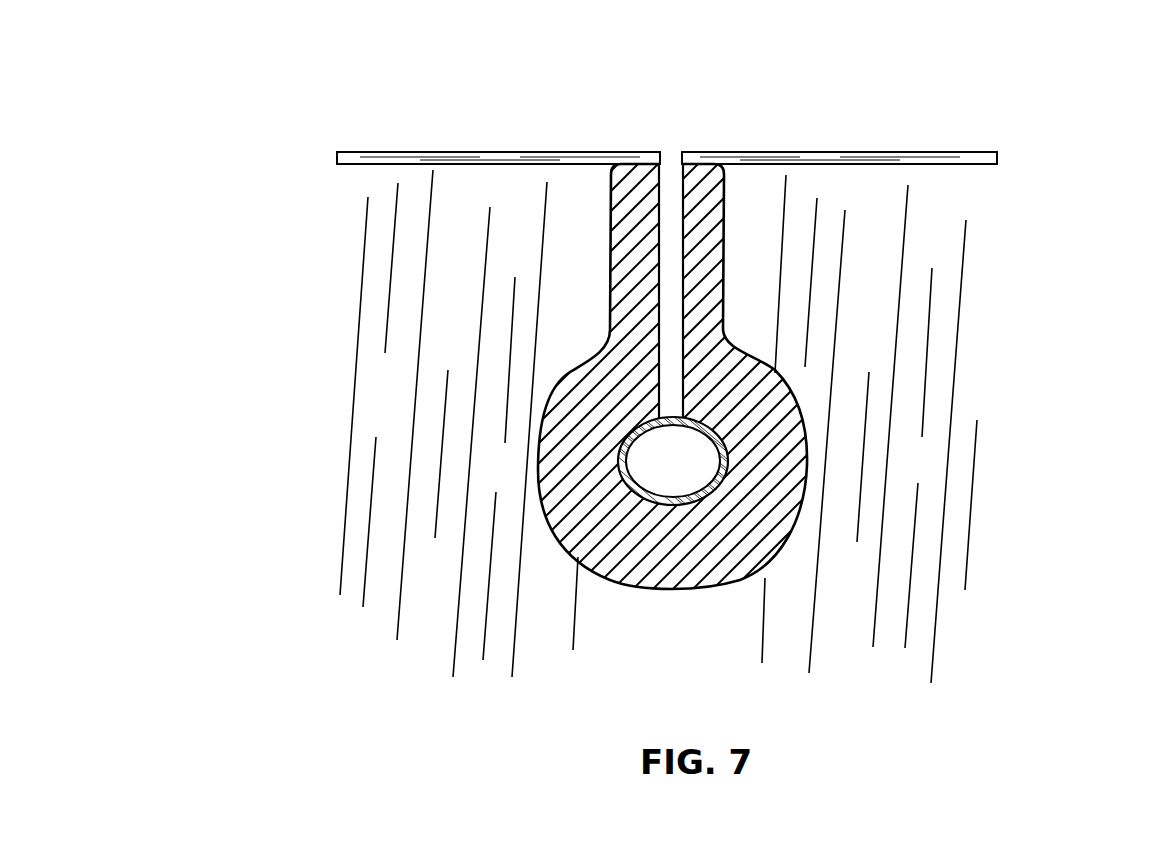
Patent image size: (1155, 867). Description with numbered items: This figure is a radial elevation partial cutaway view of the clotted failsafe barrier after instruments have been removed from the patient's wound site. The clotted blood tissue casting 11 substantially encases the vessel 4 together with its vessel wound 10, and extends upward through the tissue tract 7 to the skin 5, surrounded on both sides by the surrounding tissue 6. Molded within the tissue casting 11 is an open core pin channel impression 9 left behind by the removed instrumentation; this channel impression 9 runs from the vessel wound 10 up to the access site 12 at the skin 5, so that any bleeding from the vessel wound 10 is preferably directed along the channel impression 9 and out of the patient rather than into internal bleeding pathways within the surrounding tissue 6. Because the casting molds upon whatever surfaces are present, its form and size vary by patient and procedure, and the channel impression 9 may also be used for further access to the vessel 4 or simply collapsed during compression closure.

The vessel 4 is at (610, 459).
The skin 5 is at (319, 168).
The surrounding tissue 6 is at (364, 258).
The tissue tract 7 is at (732, 210).
The channel impression 9 is at (676, 282).
The vessel wound 10 is at (692, 424).
The blood tissue casting 11 is at (808, 490).
The access site 12 is at (664, 138).